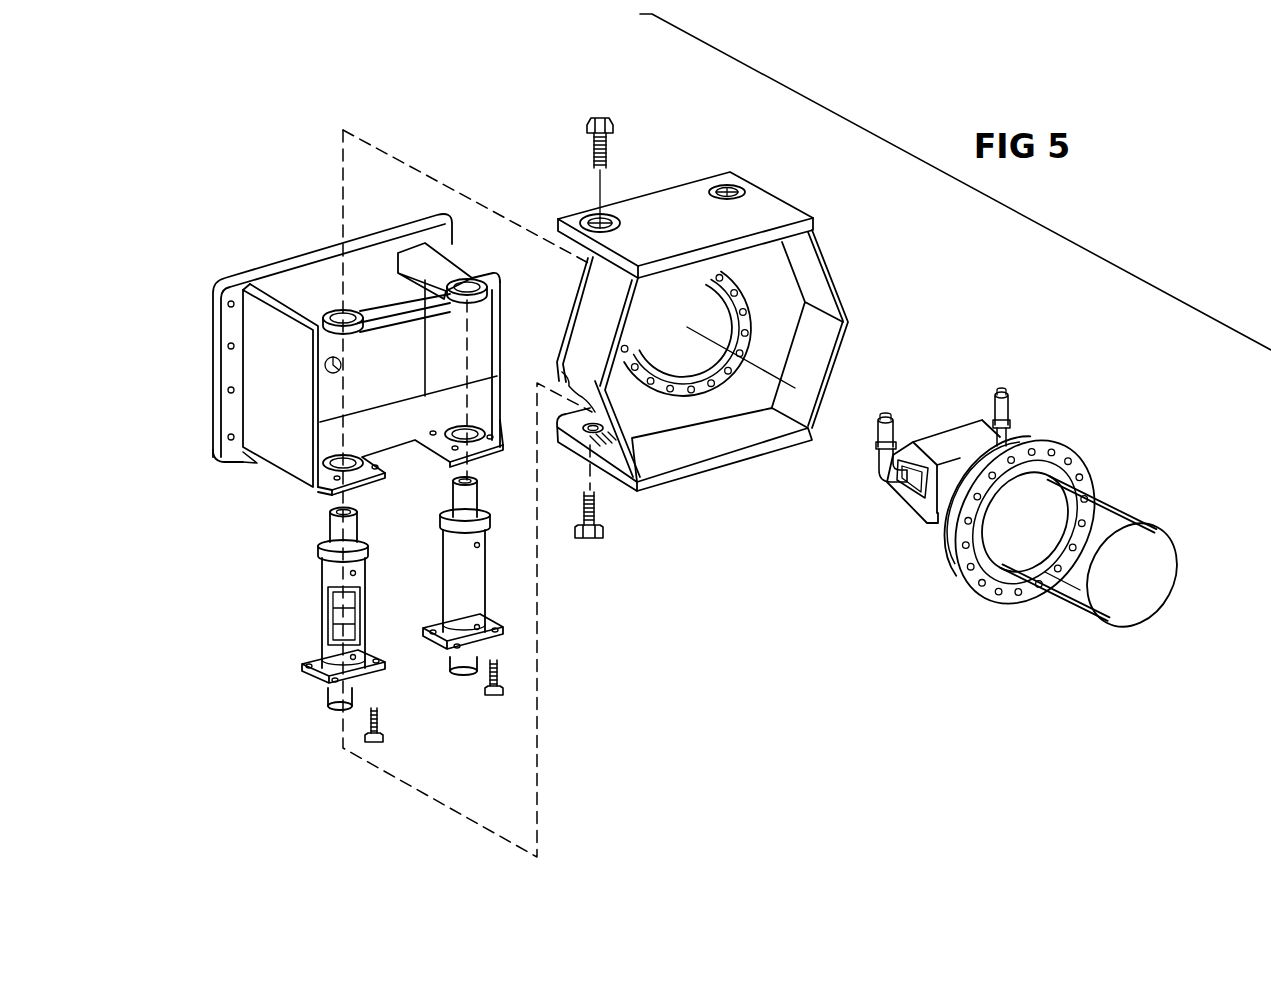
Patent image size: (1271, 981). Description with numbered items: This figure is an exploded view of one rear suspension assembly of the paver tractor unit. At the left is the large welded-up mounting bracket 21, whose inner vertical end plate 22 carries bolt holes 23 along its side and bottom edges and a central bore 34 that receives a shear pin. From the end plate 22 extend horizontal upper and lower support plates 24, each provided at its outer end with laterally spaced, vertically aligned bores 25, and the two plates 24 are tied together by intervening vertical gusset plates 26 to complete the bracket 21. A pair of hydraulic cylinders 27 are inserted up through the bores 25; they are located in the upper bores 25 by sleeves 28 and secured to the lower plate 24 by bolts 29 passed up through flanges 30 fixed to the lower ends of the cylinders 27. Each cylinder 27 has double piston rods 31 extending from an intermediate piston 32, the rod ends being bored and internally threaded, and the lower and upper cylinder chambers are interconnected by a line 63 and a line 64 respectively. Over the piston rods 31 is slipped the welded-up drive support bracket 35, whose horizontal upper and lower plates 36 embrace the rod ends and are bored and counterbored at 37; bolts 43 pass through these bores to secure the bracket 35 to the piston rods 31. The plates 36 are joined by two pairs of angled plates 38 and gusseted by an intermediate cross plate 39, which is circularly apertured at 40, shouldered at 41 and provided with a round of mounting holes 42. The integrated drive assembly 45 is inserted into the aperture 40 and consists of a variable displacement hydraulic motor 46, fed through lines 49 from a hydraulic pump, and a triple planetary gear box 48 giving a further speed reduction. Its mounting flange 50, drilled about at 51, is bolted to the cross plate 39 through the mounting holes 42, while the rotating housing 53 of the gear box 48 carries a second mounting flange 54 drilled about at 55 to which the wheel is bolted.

The mounting bracket 21 is at (262, 407).
The inner vertical end plate 22 is at (315, 250).
The bolt holes 23 is at (228, 307).
The upper and lower support plates 24 is at (450, 264).
The bores 25 is at (347, 315).
The vertical gusset plates 26 is at (433, 347).
The hydraulic cylinders 27 is at (364, 613).
The sleeves 28 is at (323, 551).
The bolts 29 is at (383, 741).
The flanges 30 is at (311, 675).
The double piston rods 31 is at (335, 528).
The intermediate pistons 32 is at (327, 616).
The central bore 34 is at (334, 374).
The drive support bracket 35 is at (672, 222).
The upper and lower plates 36 is at (790, 202).
The bores and counterbores 37 is at (594, 216).
The angled plates 38 is at (583, 308).
The intermediate cross plate 39 is at (709, 418).
The circular aperture 40 is at (718, 318).
The shoulder 41 is at (748, 307).
The mounting holes 42 is at (738, 360).
The bolts 43 is at (602, 118).
The integrated drive assembly 45 is at (1039, 495).
The variable displacement hydraulic motor 46 is at (958, 438).
The triple planetary gear box 48 is at (1038, 553).
The lines 49 is at (996, 402).
The mounting flange 50 is at (1015, 446).
The drilled holes 51 is at (950, 533).
The rotating housing 53 is at (1135, 528).
The mounting flange 54 is at (998, 596).
The drilled holes 55 is at (1088, 499).
The line 63 is at (357, 659).
The line 64 is at (356, 574).